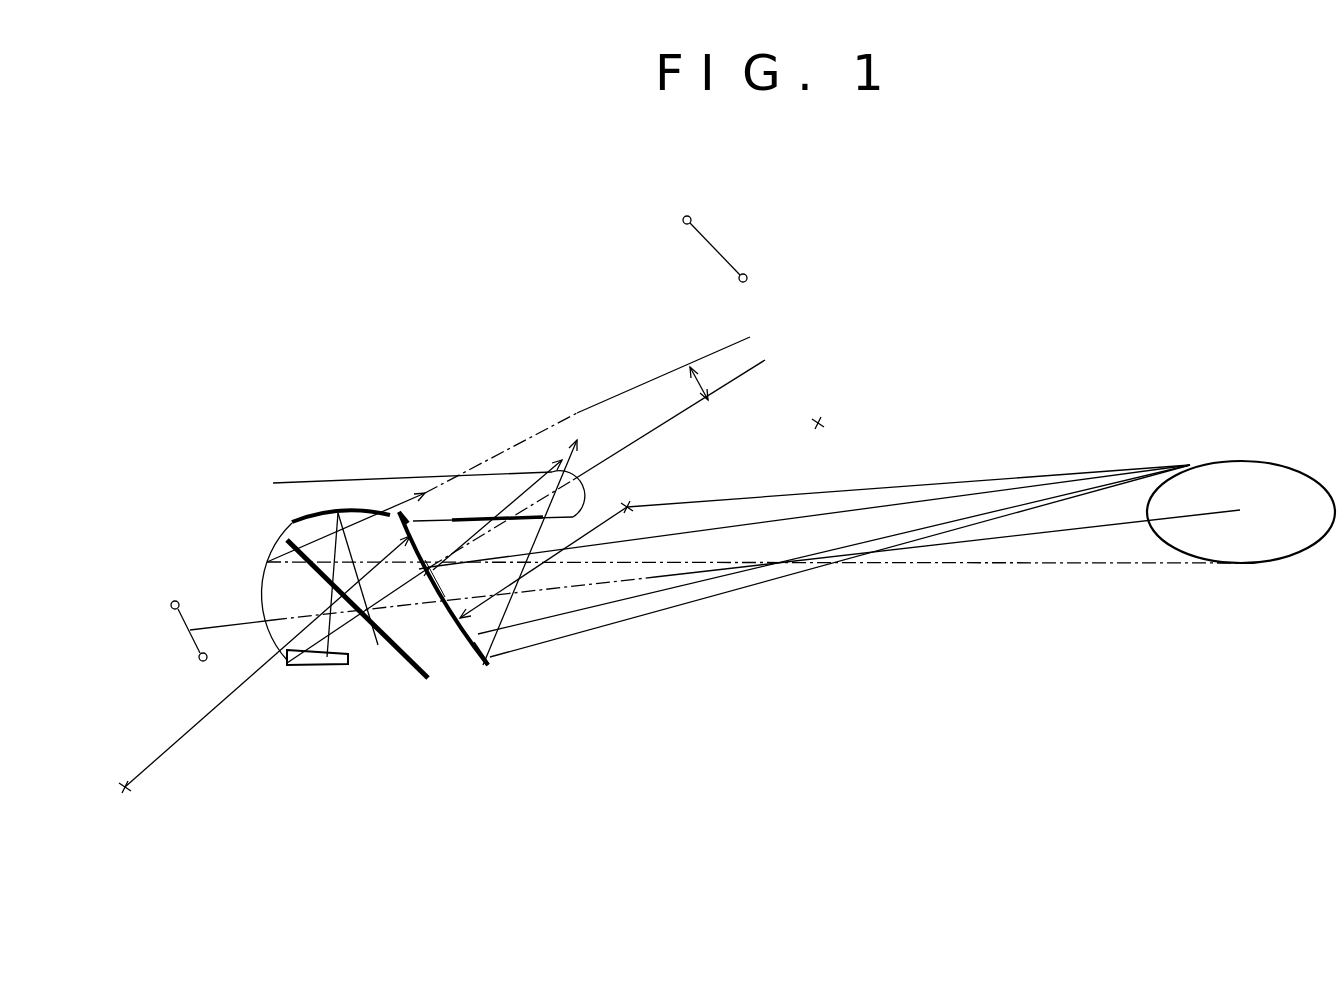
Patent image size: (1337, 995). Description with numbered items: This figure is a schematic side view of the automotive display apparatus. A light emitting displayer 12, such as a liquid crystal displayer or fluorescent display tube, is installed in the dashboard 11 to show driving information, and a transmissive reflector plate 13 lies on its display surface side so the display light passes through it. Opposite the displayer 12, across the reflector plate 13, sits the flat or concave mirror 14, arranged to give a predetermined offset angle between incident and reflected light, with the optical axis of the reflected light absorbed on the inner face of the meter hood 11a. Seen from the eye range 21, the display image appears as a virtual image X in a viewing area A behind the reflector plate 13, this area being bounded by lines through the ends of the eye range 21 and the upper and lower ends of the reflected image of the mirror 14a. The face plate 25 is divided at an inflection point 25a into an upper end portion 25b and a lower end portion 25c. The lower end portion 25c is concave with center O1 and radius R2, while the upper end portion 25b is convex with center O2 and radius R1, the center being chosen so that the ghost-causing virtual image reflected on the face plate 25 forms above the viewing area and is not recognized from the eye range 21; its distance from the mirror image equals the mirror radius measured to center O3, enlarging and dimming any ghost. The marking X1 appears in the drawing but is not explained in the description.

The dashboard 11 is at (352, 485).
The meter hood 11a is at (512, 480).
The light emitting displayer 12 is at (338, 664).
The transmissive reflector plate 13 is at (417, 677).
The mirror 14 is at (302, 512).
The virtual image of the mirror 14a is at (284, 668).
The eye range 21 is at (1268, 472).
The face plate 25 is at (495, 672).
The inflection point 25a is at (428, 572).
The upper end portion 25b is at (415, 512).
The lower end portion 25c is at (484, 663).
The center of the lower end portion O1 is at (630, 503).
The center of the upper end portion O2 is at (130, 793).
The center of the mirror radius O3 is at (827, 418).
The radius of the upper end portion R1 is at (267, 661).
The radius of the lower end portion R2 is at (543, 561).
The virtual image X is at (182, 628).
The axis X1 is at (718, 248).
The viewing area A is at (652, 392).